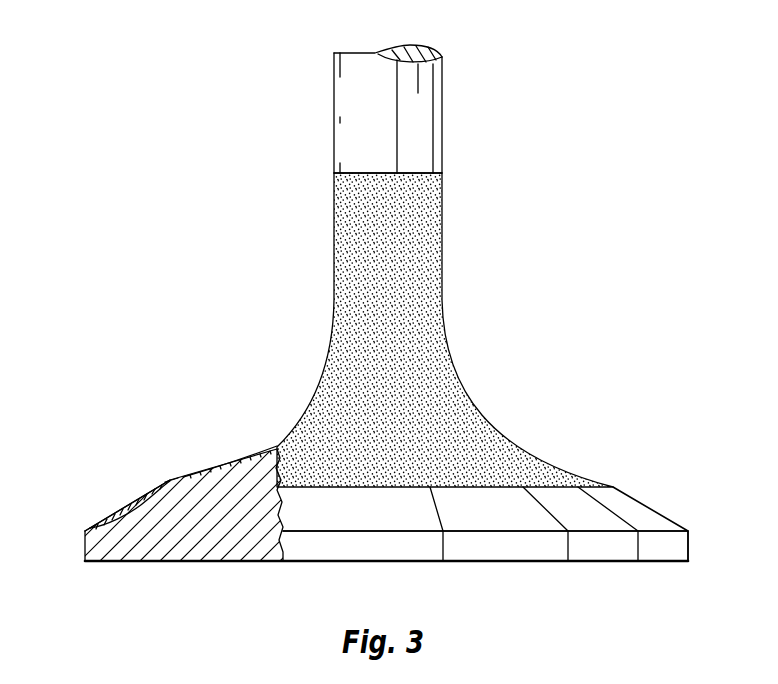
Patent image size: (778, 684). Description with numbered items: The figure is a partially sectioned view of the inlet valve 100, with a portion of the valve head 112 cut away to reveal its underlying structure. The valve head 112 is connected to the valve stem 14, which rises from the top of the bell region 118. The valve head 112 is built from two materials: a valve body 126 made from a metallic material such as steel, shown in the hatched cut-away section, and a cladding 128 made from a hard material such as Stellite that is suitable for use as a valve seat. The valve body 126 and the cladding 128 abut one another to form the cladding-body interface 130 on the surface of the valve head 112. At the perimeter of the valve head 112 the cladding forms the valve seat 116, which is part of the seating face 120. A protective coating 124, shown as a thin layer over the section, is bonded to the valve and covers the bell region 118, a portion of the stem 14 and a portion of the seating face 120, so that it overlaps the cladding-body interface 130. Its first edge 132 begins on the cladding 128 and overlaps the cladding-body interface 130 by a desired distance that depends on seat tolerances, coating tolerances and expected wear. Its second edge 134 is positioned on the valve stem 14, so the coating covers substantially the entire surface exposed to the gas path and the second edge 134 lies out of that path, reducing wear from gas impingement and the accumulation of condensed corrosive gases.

The inlet valve 100 is at (602, 104).
The valve stem 14 is at (442, 127).
The valve head 112 is at (397, 563).
The valve seat 116 is at (367, 510).
The bell region 118 is at (450, 320).
The seating face 120 is at (627, 481).
The protective coating 124 is at (230, 463).
The valve body 126 is at (185, 545).
The cladding 128 is at (128, 488).
The cladding-body interface 130 is at (170, 478).
The first edge 132 is at (158, 483).
The second edge 134 is at (345, 172).